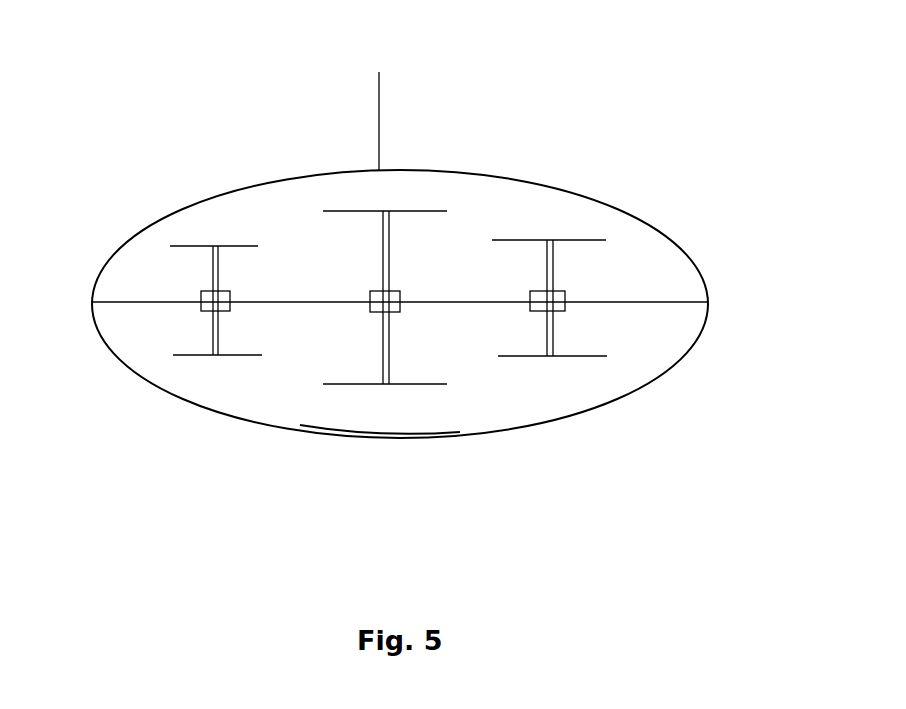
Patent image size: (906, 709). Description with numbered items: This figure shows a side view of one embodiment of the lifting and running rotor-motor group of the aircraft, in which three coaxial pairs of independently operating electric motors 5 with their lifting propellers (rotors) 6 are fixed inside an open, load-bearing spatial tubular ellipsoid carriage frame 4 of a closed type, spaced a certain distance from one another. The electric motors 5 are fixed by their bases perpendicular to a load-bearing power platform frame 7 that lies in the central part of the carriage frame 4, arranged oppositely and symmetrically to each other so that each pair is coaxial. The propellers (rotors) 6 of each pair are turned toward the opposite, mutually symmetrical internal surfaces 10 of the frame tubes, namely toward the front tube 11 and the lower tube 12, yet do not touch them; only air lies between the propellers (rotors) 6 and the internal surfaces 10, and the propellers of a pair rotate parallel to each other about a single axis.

The load-bearing spatial tubular ellipsoid carriage frame 4 is at (458, 168).
The independently operating electric motors of a coaxial pair 5 is at (210, 277).
The propellers (rotors) of a coaxial pair 6 is at (193, 240).
The load-bearing power platform frame 7 is at (442, 303).
The internal surfaces of tubes of the carriage frame 10 is at (495, 177).
The front tube of the carriage frame 11 is at (393, 95).
The lower tube of the carriage frame 12 is at (370, 440).